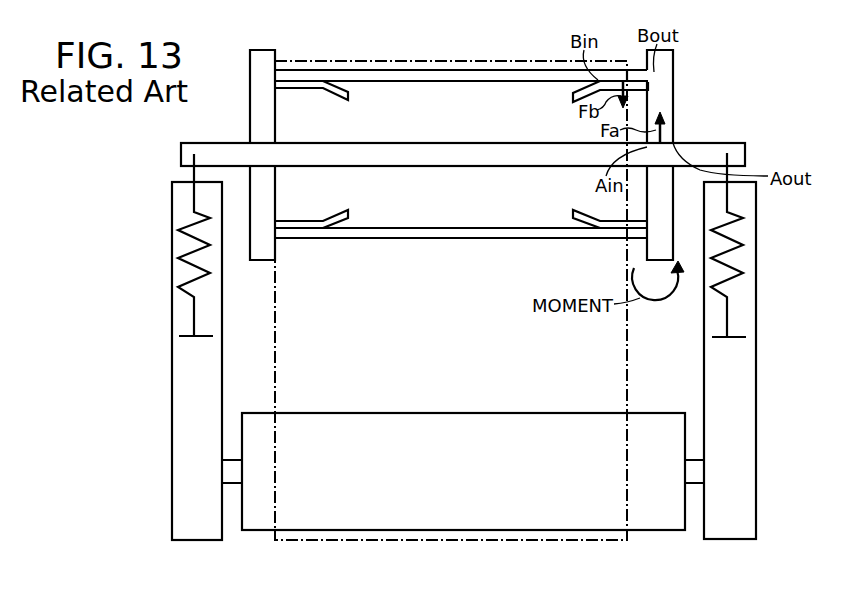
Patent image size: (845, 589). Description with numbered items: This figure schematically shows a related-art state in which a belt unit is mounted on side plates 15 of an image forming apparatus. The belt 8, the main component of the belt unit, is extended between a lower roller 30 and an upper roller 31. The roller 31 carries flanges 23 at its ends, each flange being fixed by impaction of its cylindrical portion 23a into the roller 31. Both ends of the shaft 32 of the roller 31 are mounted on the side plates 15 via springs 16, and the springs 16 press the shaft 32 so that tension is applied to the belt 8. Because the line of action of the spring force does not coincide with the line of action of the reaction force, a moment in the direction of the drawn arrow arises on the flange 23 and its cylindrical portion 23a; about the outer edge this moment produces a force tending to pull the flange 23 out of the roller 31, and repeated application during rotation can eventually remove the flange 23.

The flange 23 is at (250, 102).
The cylindrical portion 23a is at (616, 86).
The roller 31 is at (403, 74).
The shaft 32 is at (745, 156).
The belt 8 is at (626, 336).
The spring 16 is at (193, 320).
The side plate 15 is at (755, 430).
The roller 30 is at (658, 414).